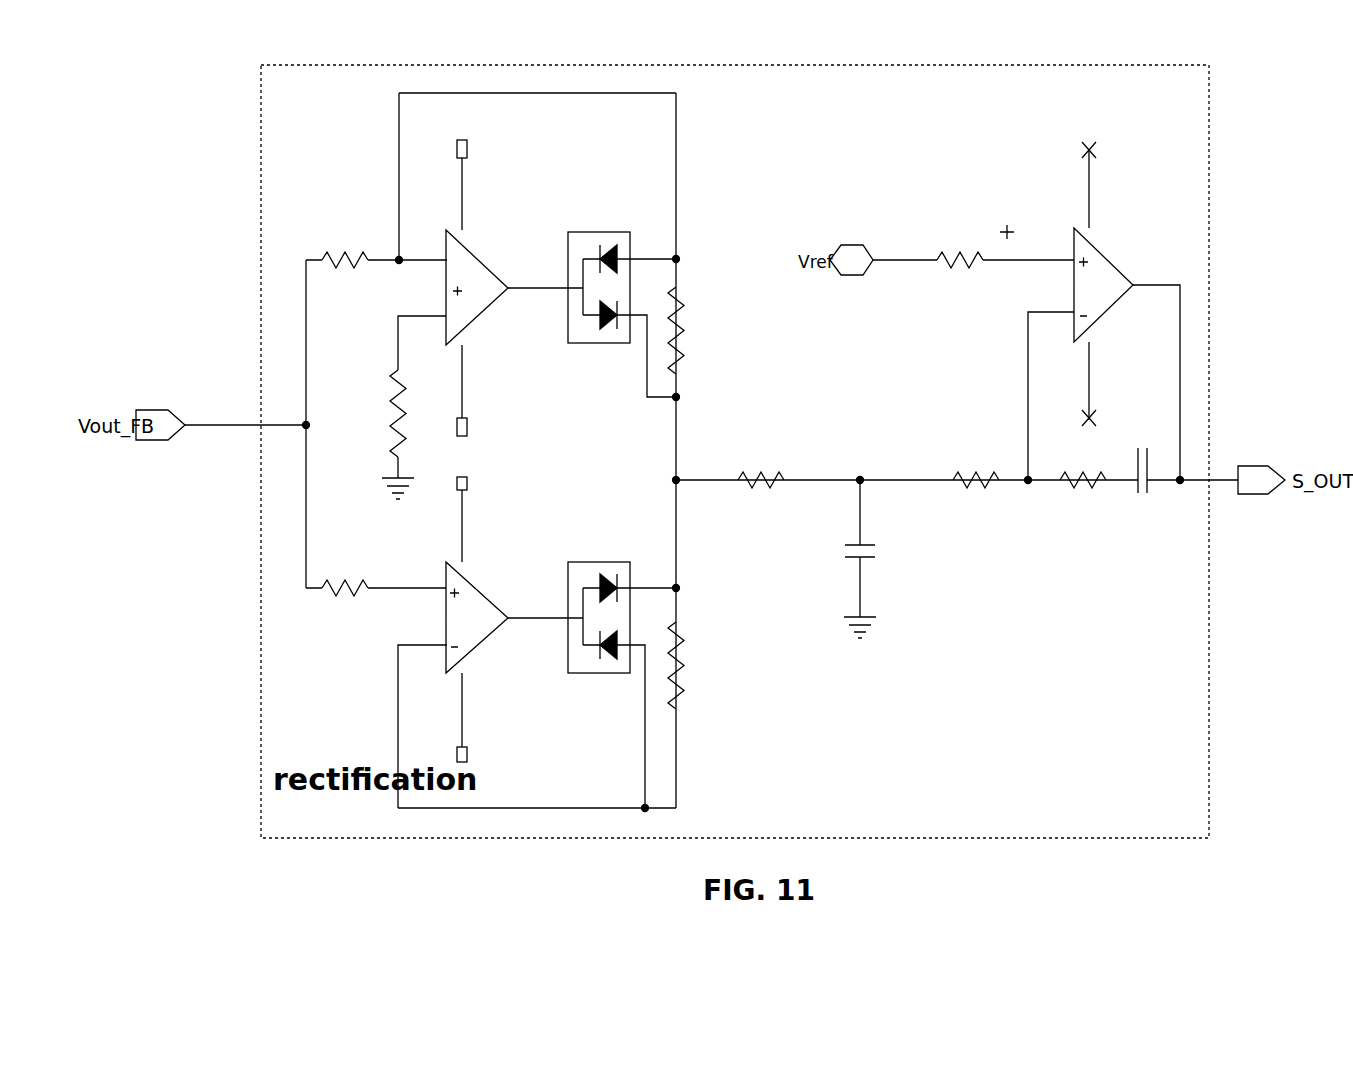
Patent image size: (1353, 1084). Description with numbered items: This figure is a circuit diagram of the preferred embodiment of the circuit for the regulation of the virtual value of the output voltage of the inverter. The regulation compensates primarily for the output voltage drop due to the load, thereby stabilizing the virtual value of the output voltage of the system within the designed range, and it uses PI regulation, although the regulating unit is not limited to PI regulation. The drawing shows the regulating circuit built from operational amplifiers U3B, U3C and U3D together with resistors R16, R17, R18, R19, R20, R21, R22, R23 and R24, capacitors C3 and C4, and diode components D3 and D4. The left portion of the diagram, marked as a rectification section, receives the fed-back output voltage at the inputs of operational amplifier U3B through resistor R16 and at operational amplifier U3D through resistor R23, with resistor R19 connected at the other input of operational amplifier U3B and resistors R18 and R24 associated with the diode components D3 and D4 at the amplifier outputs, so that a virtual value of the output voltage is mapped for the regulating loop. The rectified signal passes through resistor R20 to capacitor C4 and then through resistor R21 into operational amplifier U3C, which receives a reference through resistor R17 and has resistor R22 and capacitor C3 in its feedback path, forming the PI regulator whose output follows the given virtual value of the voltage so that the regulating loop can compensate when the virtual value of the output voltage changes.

The resistor R16 10k R16 is at (376, 268).
The resistor R17 2k R17 is at (973, 269).
The resistor R18 10k R18 is at (694, 330).
The resistor R19 4.99k R19 is at (420, 407).
The resistor R20 100k R20 is at (757, 484).
The resistor R21 2k R21 is at (971, 484).
The resistor R22 2k R22 is at (1084, 484).
The resistor R23 10k R23 is at (376, 596).
The resistor R24 10k R24 is at (694, 665).
The capacitor C3 10u C3 is at (1148, 480).
The capacitor C4 10u C4 is at (844, 559).
The dual diode D3 is at (621, 309).
The dual diode D4 is at (622, 679).
The operational amplifier U3B LM324 U3B is at (504, 288).
The operational amplifier U3C LM324 U3C is at (1114, 311).
The operational amplifier U3D LM324 U3D is at (501, 619).